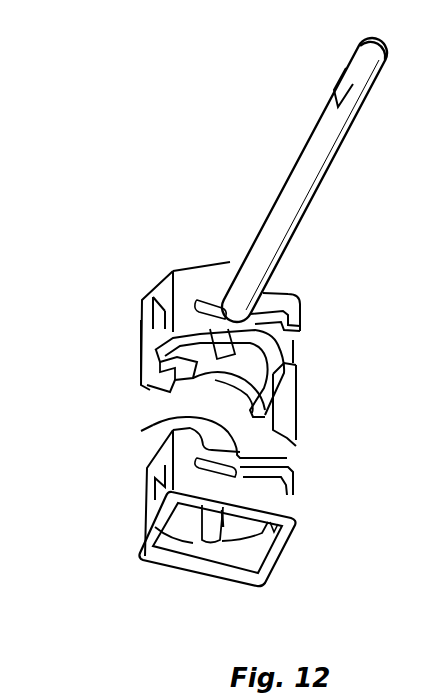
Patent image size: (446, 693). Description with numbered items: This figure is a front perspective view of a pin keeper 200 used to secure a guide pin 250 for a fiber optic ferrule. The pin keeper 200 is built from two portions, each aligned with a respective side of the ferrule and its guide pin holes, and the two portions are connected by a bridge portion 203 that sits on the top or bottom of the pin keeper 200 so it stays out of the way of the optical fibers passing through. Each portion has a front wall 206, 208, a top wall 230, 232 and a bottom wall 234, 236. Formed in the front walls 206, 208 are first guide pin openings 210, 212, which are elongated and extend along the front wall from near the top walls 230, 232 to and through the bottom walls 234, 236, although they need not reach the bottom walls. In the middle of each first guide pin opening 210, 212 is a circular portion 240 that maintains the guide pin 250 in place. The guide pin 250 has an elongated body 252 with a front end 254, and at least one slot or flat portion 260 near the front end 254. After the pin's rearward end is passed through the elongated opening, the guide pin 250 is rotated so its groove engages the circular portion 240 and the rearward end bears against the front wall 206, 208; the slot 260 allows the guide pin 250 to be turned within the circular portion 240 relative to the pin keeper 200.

The pin keeper 200 is at (115, 321).
The bridge portion 203 is at (293, 397).
The front wall 206 is at (285, 295).
The front wall 208 is at (283, 505).
The first guide pin opening 210 is at (158, 296).
The first guide pin opening 212 is at (160, 457).
The top wall 230 is at (137, 362).
The top wall 232 is at (143, 530).
The bottom wall 234 is at (290, 322).
The bottom wall 236 is at (272, 562).
The circular portion 240 is at (156, 427).
The guide pin 250 is at (323, 155).
The elongated body 252 is at (317, 208).
The front end 254 is at (377, 36).
The slot or flat portion 260 is at (345, 80).